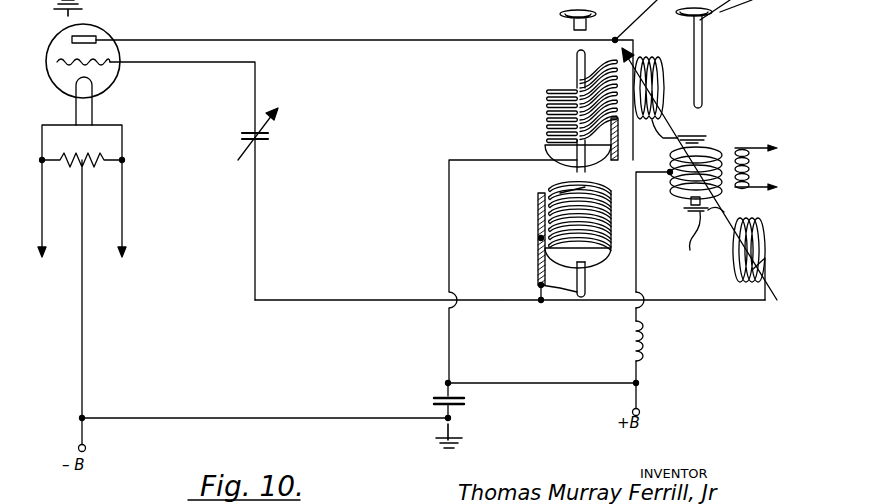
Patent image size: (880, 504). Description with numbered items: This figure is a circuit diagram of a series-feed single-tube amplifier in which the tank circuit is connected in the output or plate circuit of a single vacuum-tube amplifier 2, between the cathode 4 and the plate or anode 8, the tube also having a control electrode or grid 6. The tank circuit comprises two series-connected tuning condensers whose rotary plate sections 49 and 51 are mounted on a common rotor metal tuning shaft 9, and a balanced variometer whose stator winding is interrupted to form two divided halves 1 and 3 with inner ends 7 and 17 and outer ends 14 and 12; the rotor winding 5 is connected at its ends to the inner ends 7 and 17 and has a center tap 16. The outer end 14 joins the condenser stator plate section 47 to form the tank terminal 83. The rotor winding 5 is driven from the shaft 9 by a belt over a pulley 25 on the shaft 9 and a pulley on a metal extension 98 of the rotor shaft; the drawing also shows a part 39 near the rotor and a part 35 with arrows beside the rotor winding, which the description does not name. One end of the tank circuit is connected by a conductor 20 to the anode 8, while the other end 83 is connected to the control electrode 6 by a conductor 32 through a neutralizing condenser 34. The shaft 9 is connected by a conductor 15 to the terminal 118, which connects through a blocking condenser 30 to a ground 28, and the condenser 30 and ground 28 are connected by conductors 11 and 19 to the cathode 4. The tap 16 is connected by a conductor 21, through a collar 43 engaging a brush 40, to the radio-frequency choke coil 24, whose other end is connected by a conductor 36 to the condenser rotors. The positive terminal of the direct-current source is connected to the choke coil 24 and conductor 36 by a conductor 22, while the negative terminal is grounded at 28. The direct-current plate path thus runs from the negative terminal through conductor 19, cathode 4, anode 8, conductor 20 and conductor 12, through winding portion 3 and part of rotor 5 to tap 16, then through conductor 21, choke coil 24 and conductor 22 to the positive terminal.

The stator inductor-winding portion 1 is at (736, 264).
The vacuum-tube amplifier 2 is at (118, 85).
The stator inductor-winding portion 3 is at (665, 75).
The cathode 4 is at (80, 80).
The rotor winding 5 is at (712, 158).
The control electrode 6 is at (68, 62).
The inner end 7 is at (722, 214).
The plate 8 is at (98, 37).
The rotor metal tuning shaft 9 is at (576, 60).
The conductor 11 is at (350, 405).
The conductor 12 is at (645, 44).
The conductor 14 is at (676, 304).
The conductor 15 is at (449, 220).
The center tap 16 is at (672, 178).
The inner end 17 is at (668, 140).
The conductor 19 is at (82, 310).
The conductor 20 is at (460, 38).
The conductor 21 is at (637, 262).
The conductor 22 is at (640, 396).
The radio-frequency choke coil 24 is at (645, 350).
The pulley 25 is at (556, 10).
The ground 28 is at (63, 15).
The blocking condenser 30 is at (458, 405).
The conductor 32 is at (345, 312).
The neutralizing condenser 34 is at (262, 140).
The coupling coil 35 is at (750, 172).
The conductor 36 is at (247, 4).
The plate 39 is at (690, 136).
The brush 40 is at (690, 210).
The collar 43 is at (699, 239).
The stationary-condenser plate section 47 is at (540, 240).
The rotary-condenser plate section 49 is at (546, 108).
The rotary-condenser plate section 51 is at (598, 190).
The terminal 83 is at (541, 302).
The metal extension 98 is at (702, 43).
The terminal 118 is at (452, 380).